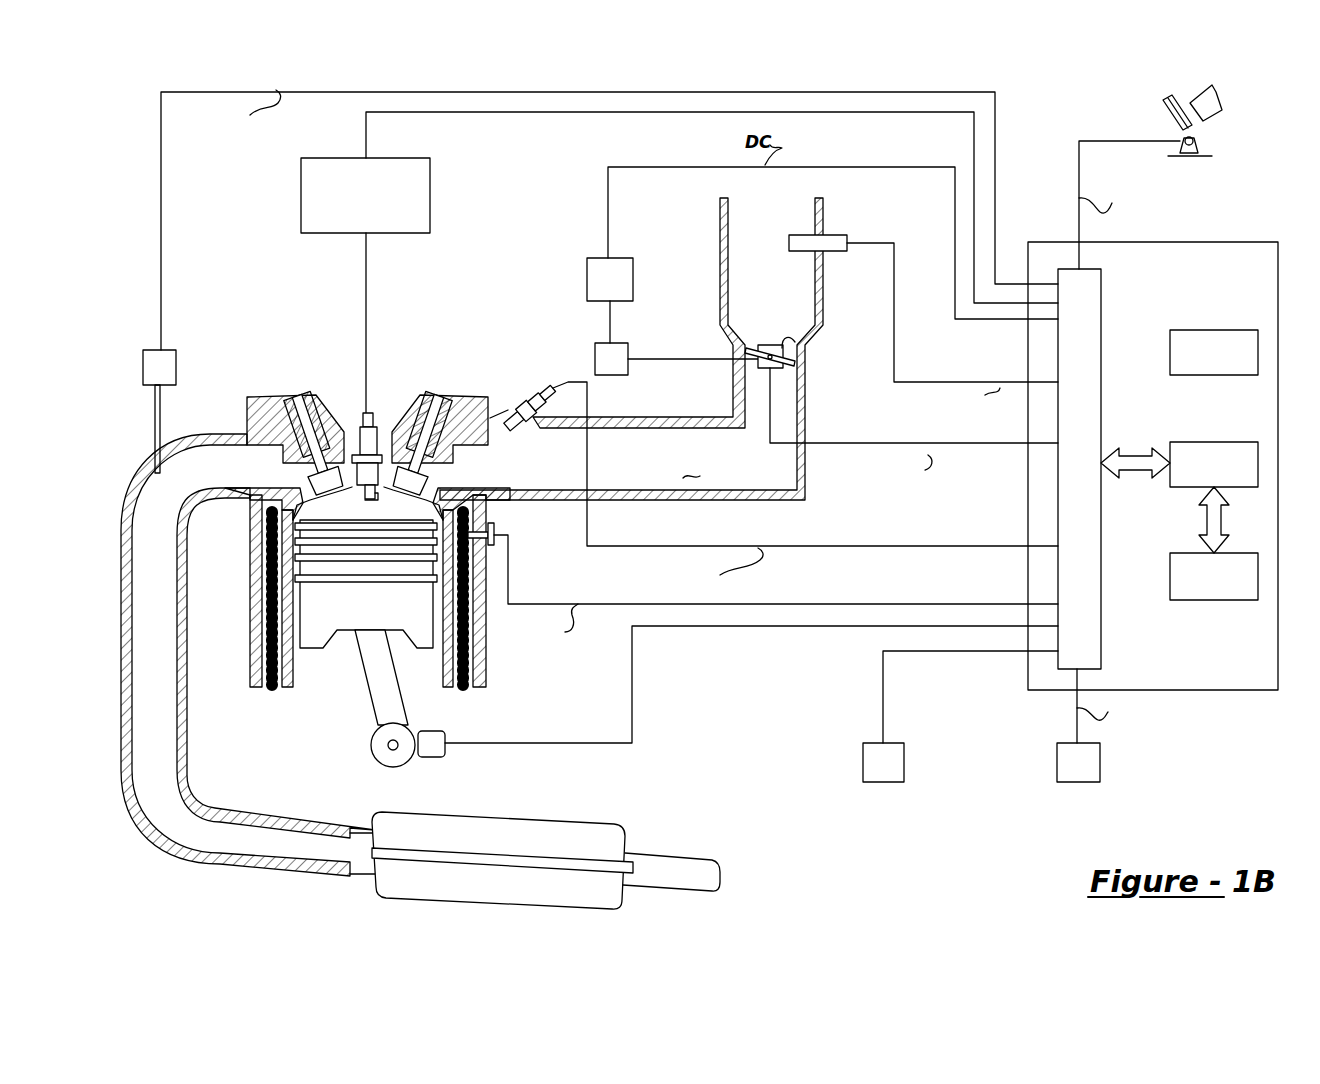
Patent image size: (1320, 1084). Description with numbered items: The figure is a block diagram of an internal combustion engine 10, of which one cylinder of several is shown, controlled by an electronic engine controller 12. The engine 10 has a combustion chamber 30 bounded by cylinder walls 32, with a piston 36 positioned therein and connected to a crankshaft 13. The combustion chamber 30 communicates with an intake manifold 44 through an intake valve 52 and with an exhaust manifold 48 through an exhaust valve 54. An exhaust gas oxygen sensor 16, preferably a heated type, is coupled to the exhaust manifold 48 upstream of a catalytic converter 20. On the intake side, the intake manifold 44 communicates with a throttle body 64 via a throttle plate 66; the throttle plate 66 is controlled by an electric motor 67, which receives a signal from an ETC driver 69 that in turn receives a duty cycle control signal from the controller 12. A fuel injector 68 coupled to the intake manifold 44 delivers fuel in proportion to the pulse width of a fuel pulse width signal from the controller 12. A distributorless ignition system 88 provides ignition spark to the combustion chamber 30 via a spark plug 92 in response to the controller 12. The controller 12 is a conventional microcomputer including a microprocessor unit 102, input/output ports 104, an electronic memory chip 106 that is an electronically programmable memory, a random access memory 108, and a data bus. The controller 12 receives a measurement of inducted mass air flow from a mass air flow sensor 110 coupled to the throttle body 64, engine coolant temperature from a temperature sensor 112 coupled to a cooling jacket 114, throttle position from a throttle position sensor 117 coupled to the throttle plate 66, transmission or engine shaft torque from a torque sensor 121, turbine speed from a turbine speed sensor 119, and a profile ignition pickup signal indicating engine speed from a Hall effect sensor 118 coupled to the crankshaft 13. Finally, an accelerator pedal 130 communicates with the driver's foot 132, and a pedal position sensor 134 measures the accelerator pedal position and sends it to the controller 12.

The internal combustion engine 10 is at (292, 760).
The electronic engine controller 12 is at (1210, 690).
The crankshaft 13 is at (384, 760).
The exhaust gas oxygen sensor 16 is at (146, 365).
The catalytic converter 20 is at (555, 825).
The combustion chamber 30 is at (345, 555).
The cylinder walls 32 is at (290, 682).
The piston 36 is at (345, 610).
The intake manifold 44 is at (622, 473).
The exhaust manifold 48 is at (176, 492).
The intake valve 52 is at (448, 477).
The exhaust valve 54 is at (320, 478).
The throttle body 64 is at (748, 260).
The throttle plate 66 is at (760, 352).
The electric motor 67 is at (596, 358).
The fuel injector 68 is at (525, 400).
The ETC driver 69 is at (589, 280).
The distributorless ignition system 88 is at (430, 207).
The spark plug 92 is at (380, 420).
The microprocessor unit 102 is at (1200, 442).
The input/output ports 104 is at (1101, 312).
The electronic memory chip 106 is at (1190, 330).
The random access memory 108 is at (1193, 600).
The mass air flow sensor 110 is at (790, 243).
The temperature sensor 112 is at (494, 525).
The cooling jacket 114 is at (485, 682).
The throttle position sensor 117 is at (800, 345).
The Hall effect sensor 118 is at (430, 757).
The turbine speed sensor 119 is at (1100, 775).
The torque sensor 121 is at (904, 762).
The accelerator pedal 130 is at (1170, 122).
The driver's foot 132 is at (1222, 108).
The pedal position sensor 134 is at (1198, 150).